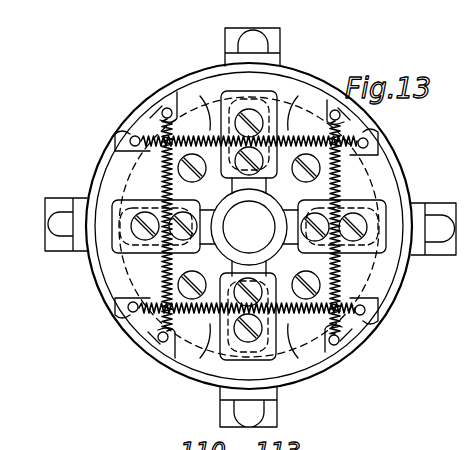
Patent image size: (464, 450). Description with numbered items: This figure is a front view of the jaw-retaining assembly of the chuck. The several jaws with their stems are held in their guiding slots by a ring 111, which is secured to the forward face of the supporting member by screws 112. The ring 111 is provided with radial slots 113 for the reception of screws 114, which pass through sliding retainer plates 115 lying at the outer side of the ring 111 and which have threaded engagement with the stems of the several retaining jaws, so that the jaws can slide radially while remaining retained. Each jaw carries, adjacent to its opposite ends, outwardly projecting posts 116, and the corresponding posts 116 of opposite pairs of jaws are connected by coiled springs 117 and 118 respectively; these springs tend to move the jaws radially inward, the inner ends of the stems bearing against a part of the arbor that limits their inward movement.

The ring 111 is at (288, 330).
The screws 112 is at (213, 302).
The radial slots 113 is at (252, 100).
The screws 114 is at (258, 118).
The sliding retainer plates 115 is at (230, 104).
The posts 116 is at (370, 137).
The coiled springs 117 is at (345, 175).
The coiled springs 118 is at (207, 100).